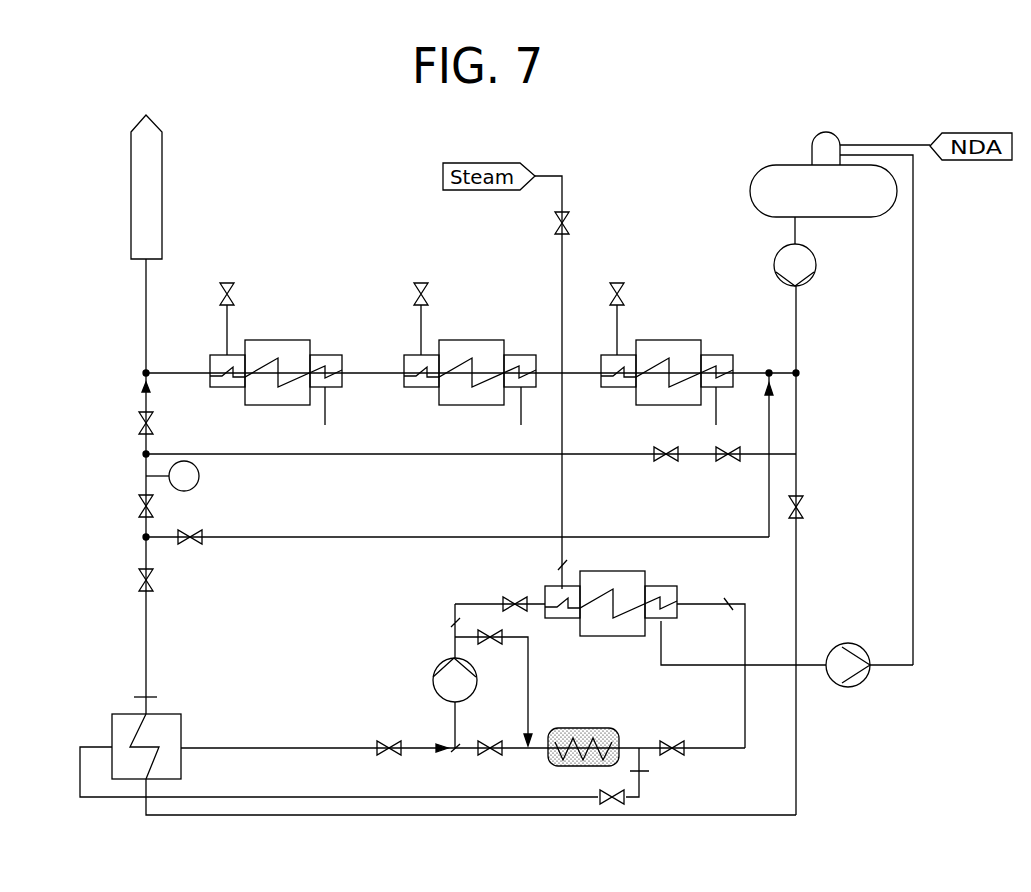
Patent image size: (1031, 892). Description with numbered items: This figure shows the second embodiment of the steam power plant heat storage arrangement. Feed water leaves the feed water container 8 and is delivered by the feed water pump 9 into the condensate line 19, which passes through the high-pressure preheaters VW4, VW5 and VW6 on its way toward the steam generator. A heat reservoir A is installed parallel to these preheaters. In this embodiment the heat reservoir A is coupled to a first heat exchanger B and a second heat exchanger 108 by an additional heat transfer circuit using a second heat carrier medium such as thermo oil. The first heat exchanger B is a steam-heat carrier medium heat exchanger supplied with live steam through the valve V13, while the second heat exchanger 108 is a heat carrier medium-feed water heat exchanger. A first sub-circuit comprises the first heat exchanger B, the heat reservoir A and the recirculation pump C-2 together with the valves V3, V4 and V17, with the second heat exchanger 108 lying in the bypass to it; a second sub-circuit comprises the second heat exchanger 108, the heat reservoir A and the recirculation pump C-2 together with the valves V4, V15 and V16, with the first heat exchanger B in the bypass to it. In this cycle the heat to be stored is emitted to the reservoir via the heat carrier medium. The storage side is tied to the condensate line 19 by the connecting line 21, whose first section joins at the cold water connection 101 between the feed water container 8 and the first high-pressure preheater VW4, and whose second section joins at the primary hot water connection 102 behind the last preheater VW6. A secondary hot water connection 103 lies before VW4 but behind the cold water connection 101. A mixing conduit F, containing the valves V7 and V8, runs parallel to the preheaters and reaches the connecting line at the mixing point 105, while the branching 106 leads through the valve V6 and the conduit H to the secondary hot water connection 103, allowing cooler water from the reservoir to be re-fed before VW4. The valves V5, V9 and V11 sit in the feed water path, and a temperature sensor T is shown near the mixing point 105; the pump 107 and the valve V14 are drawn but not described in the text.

The feed water container 8 is at (790, 175).
The feed water pump 9 is at (817, 262).
The condensate line 19 is at (145, 318).
The connecting line 21 is at (797, 558).
The cold water connection 101 is at (800, 369).
The primary hot water connection 102 is at (143, 373).
The secondary hot water connection 103 is at (769, 368).
The mixing point 105 is at (143, 454).
The branching 106 is at (143, 537).
The pump 107 is at (864, 683).
The second heat exchanger 108 is at (130, 714).
The valve V3 is at (668, 742).
The valve V4 is at (486, 742).
The valve V5 is at (152, 580).
The valve V6 is at (200, 530).
The valve V7 is at (656, 452).
The valve V8 is at (727, 460).
The valve V9 is at (140, 418).
The valve V11 is at (152, 505).
The valve V13 is at (571, 222).
The valve V14 is at (488, 634).
The valve V15 is at (392, 742).
The valve V16 is at (626, 792).
The valve V17 is at (512, 600).
The first high-pressure preheater VW4 is at (674, 338).
The high-pressure preheater VW5 is at (468, 338).
The last high-pressure preheater VW6 is at (272, 338).
The heat reservoir A is at (576, 727).
The first heat exchanger B is at (648, 578).
The recirculation pump C-2 is at (431, 701).
The mixing conduit F is at (405, 454).
The conduit H is at (365, 537).
The temperature sensor T is at (172, 476).